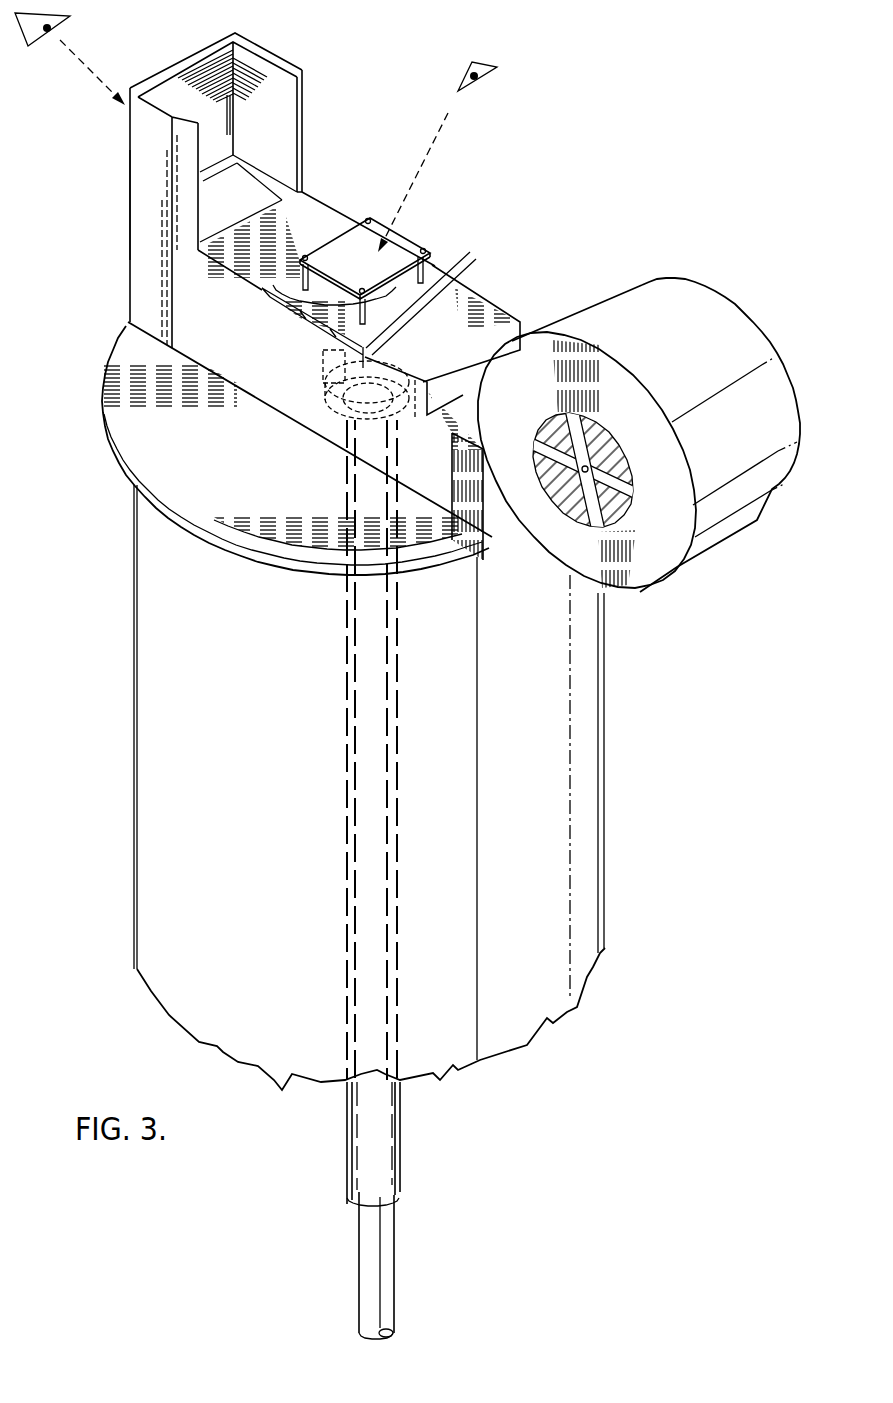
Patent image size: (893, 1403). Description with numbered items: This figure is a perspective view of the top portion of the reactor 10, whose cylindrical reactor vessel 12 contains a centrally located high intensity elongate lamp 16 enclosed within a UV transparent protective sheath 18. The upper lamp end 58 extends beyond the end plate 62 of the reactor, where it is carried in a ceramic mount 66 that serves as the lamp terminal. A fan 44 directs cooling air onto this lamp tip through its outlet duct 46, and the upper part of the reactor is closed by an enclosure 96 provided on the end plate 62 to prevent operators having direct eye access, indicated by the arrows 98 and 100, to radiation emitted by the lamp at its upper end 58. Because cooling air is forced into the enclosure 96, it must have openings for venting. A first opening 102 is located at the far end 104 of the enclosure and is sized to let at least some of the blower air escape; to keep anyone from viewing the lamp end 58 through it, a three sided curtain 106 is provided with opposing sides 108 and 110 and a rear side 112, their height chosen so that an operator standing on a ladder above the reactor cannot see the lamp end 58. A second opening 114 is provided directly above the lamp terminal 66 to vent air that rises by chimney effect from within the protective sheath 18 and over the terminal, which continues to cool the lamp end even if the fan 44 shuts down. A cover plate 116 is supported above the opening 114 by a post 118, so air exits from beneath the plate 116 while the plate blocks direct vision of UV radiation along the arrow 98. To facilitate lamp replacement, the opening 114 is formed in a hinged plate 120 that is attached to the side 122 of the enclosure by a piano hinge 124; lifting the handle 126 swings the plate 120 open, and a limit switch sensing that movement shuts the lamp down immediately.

The reactor 10 is at (628, 701).
The reactor vessel 12 is at (628, 895).
The high intensity medium pressure elongate lamp 16 is at (363, 1258).
The UV transparent protective sheath 18 is at (400, 1145).
The fan 44 is at (705, 270).
The duct 46 is at (553, 543).
The lamp end 58 is at (343, 433).
The end plate 62 is at (117, 413).
The ceramic mount 66 is at (387, 427).
The enclosure 96 is at (491, 293).
The arrow 98 is at (448, 113).
The arrow 100 is at (93, 70).
The first opening 102 is at (245, 177).
The far end 104 is at (153, 255).
The three sided curtain 106 is at (152, 145).
The opposing side 108 is at (152, 202).
The opposing side 110 is at (289, 135).
The rear side 112 is at (188, 77).
The opening 114 is at (392, 290).
The cover plate 116 is at (397, 240).
The post 118 is at (290, 303).
The hinged plate 120 is at (447, 287).
The side 122 is at (267, 387).
The piano hinge 124 is at (313, 340).
The handle 126 is at (443, 240).